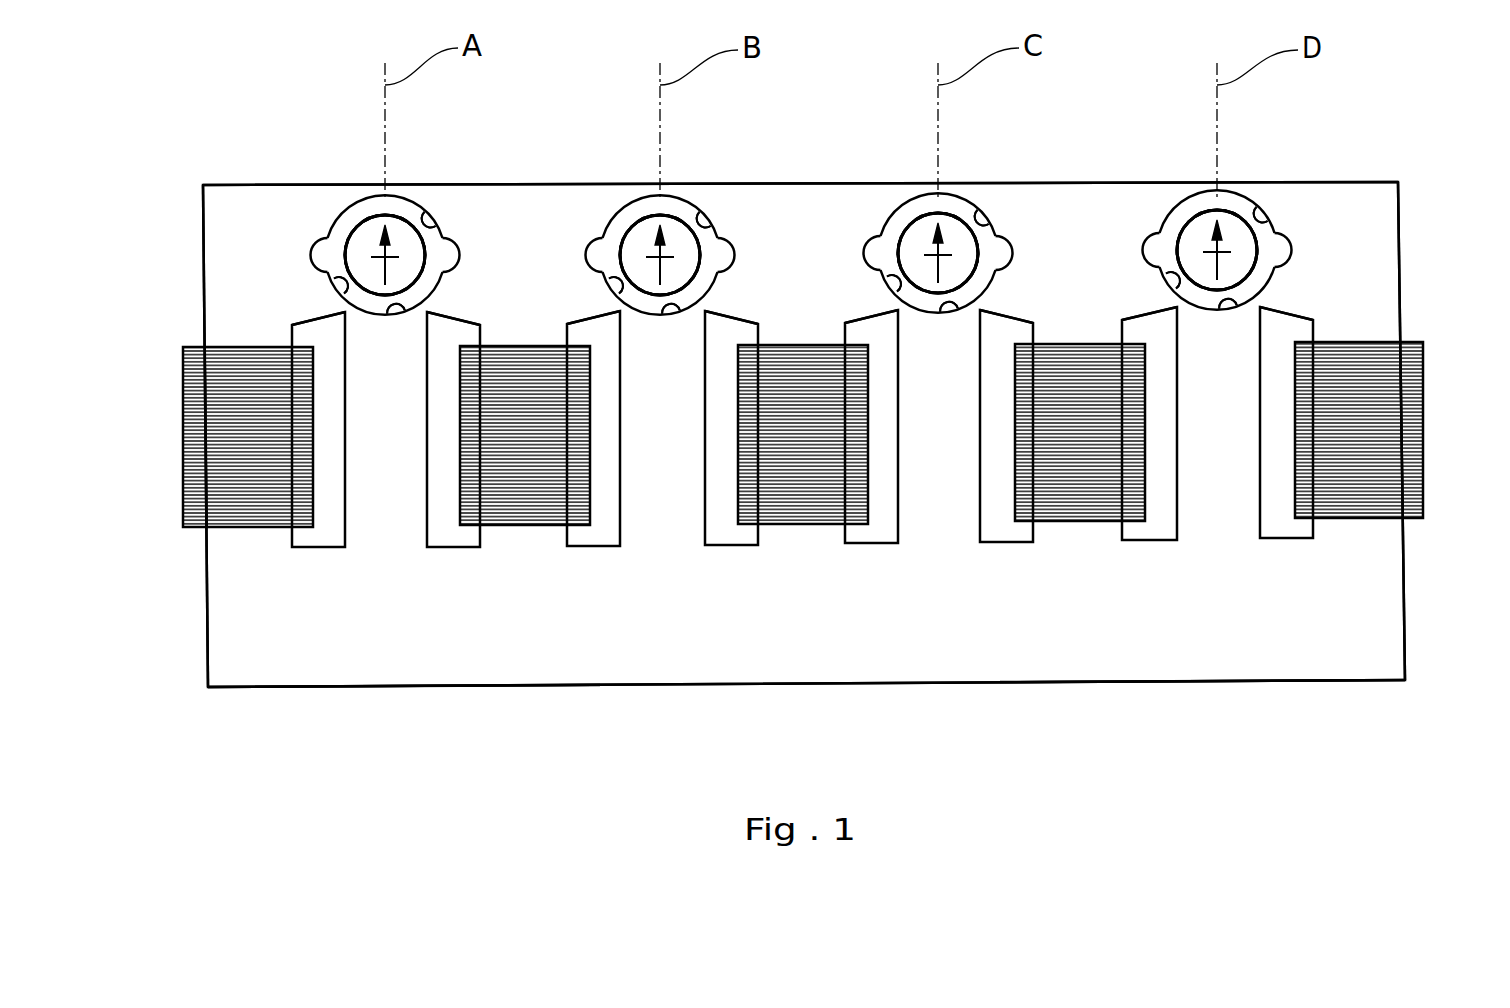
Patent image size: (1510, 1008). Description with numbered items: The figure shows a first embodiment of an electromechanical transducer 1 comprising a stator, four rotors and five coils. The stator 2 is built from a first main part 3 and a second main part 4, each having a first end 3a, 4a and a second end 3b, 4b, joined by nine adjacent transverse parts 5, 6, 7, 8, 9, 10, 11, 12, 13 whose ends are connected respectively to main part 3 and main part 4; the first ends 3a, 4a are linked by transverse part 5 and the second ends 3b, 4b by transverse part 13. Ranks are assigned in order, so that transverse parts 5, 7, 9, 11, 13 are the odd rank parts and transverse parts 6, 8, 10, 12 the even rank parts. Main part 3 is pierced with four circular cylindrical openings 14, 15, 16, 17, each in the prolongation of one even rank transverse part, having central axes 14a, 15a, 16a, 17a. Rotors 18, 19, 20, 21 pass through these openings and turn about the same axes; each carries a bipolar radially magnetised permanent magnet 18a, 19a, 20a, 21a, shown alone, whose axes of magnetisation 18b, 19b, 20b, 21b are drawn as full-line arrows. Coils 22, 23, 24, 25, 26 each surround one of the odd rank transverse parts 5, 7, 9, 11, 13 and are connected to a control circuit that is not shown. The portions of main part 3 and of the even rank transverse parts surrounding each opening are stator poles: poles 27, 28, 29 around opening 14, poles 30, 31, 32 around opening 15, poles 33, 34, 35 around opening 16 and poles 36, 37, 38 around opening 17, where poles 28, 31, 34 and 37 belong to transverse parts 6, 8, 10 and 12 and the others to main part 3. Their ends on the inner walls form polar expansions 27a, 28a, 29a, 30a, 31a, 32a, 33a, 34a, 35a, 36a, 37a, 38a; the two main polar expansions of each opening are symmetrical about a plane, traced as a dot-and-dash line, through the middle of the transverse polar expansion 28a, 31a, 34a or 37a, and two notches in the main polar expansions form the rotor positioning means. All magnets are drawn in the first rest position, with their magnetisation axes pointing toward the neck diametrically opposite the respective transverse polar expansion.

The electromechanical transducer 1 is at (1383, 90).
The stator 2 is at (1385, 638).
The first main part 3 is at (832, 193).
The first end of first main part 3a is at (230, 217).
The second end of first main part 3b is at (1405, 195).
The second main part 4 is at (903, 665).
The first end of second main part 4a is at (258, 665).
The second end of second main part 4b is at (1367, 645).
The transverse part 5 is at (248, 440).
The transverse part 6 is at (382, 530).
The transverse part 7 is at (548, 545).
The transverse part 8 is at (665, 455).
The transverse part 9 is at (815, 480).
The transverse part 10 is at (940, 455).
The transverse part 11 is at (1100, 523).
The transverse part 12 is at (1210, 523).
The transverse part 13 is at (1390, 445).
The opening 14 is at (412, 212).
The central axis 14a is at (360, 232).
The opening 15 is at (700, 213).
The central axis 15a is at (642, 235).
The opening 16 is at (968, 210).
The central axis 16a is at (918, 235).
The opening 17 is at (1250, 206).
The central axis 17a is at (1197, 232).
The rotor 18 is at (367, 228).
The permanent magnet 18a is at (350, 203).
The axis of magnetisation 18b is at (387, 274).
The rotor 19 is at (645, 228).
The permanent magnet 19a is at (625, 203).
The axis of magnetisation 19b is at (662, 273).
The rotor 20 is at (925, 218).
The permanent magnet 20a is at (911, 202).
The axis of magnetisation 20b is at (940, 272).
The rotor 21 is at (1203, 222).
The permanent magnet 21a is at (1192, 200).
The axis of magnetisation 21b is at (1222, 270).
The coil 22 is at (228, 398).
The coil 23 is at (505, 520).
The coil 24 is at (785, 505).
The coil 25 is at (1068, 505).
The coil 26 is at (1385, 372).
The stator pole 27 is at (257, 266).
The polar expansion 27a is at (332, 287).
The stator pole 28 is at (370, 356).
The transverse polar expansion 28a is at (400, 316).
The stator pole 29 is at (473, 266).
The polar expansion 29a is at (437, 222).
The stator pole 30 is at (530, 266).
The polar expansion 30a is at (612, 287).
The stator pole 31 is at (645, 356).
The transverse polar expansion 31a is at (675, 316).
The stator pole 32 is at (750, 266).
The polar expansion 32a is at (722, 224).
The stator pole 33 is at (813, 266).
The polar expansion 33a is at (890, 285).
The stator pole 34 is at (925, 353).
The transverse polar expansion 34a is at (952, 314).
The stator pole 35 is at (1025, 266).
The polar expansion 35a is at (1000, 222).
The stator pole 36 is at (1107, 266).
The polar expansion 36a is at (1170, 285).
The stator pole 37 is at (1202, 353).
The transverse polar expansion 37a is at (1231, 311).
The stator pole 38 is at (1299, 266).
The polar expansion 38a is at (1280, 222).